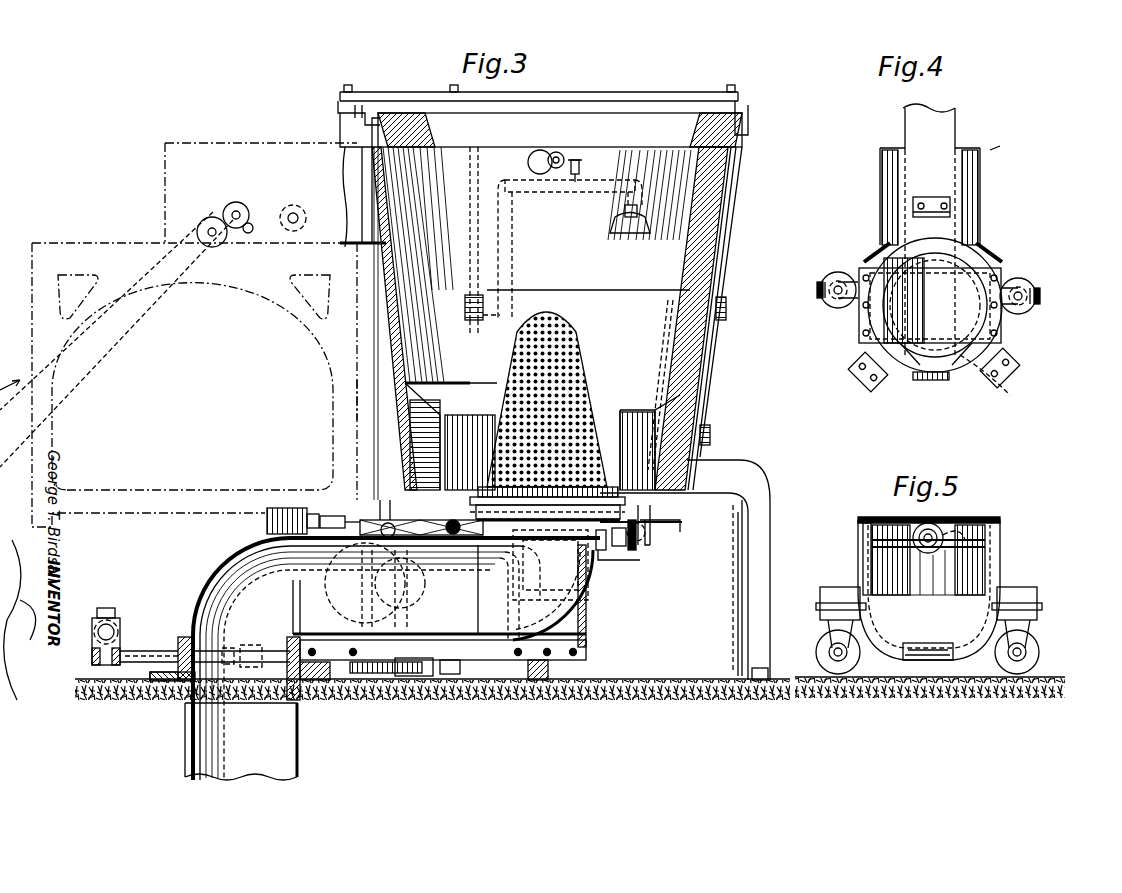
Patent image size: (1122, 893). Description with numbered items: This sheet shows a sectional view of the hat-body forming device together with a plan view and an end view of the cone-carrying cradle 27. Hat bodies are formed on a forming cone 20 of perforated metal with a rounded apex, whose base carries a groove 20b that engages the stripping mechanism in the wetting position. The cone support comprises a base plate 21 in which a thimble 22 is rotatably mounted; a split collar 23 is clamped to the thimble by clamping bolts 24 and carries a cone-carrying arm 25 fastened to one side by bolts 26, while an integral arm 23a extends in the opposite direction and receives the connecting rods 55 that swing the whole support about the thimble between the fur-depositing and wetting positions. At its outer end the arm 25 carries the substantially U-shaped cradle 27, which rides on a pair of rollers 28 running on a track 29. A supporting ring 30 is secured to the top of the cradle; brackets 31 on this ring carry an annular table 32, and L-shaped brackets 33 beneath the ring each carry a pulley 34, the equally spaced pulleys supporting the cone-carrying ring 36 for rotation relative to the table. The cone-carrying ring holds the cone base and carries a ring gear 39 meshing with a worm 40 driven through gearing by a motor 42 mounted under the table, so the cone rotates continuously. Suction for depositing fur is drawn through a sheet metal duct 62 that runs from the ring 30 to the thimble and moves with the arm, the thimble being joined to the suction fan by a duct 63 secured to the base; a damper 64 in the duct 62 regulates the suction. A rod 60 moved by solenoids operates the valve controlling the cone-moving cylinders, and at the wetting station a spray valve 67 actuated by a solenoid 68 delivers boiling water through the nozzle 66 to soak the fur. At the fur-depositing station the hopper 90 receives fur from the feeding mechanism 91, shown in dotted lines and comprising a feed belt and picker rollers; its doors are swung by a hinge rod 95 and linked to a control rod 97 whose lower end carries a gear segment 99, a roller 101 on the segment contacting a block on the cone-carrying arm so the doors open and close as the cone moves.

In FIG. 3, the forming cone 20 is at (585, 372).
In FIG. 3, the groove 20b is at (475, 508).
In FIG. 3, the base plate 21 is at (165, 690).
In FIG. 3, the thimble 22 is at (186, 637).
In FIG. 3, the split collar 23 is at (323, 663).
In FIG. 4, the split collar 23 is at (948, 122).
In FIG. 5, the split collar 23 is at (940, 660).
In FIG. 3, the arm 23a is at (145, 651).
In FIG. 3, the clamping bolts 24 is at (252, 645).
In FIG. 3, the cone-carrying arm 25 is at (420, 674).
In FIG. 3, the bolts 26 is at (320, 645).
In FIG. 3, the cone-carrying cradle 27 is at (594, 637).
In FIG. 4, the cone-carrying cradle 27 is at (851, 330).
In FIG. 5, the cone-carrying cradle 27 is at (850, 556).
In FIG. 3, the rollers 28 is at (540, 682).
In FIG. 4, the rollers 28 is at (818, 290).
In FIG. 5, the rollers 28 is at (818, 650).
In FIG. 3, the track 29 is at (552, 672).
In FIG. 5, the track 29 is at (1045, 676).
In FIG. 3, the supporting ring 30 is at (603, 550).
In FIG. 4, the supporting ring 30 is at (910, 362).
In FIG. 5, the supporting ring 30 is at (866, 520).
In FIG. 3, the brackets 31 is at (640, 548).
In FIG. 3, the annular table 32 is at (665, 540).
In FIG. 4, the annular table 32 is at (950, 205).
In FIG. 3, the L-shaped brackets 33 is at (615, 560).
In FIG. 4, the L-shaped brackets 33 is at (985, 382).
In FIG. 5, the L-shaped brackets 33 is at (975, 520).
In FIG. 3, the pulley 34 is at (620, 548).
In FIG. 4, the pulley 34 is at (872, 250).
In FIG. 5, the pulley 34 is at (936, 525).
In FIG. 3, the cone-carrying ring 36 is at (630, 522).
In FIG. 3, the ring gear 39 is at (648, 540).
In FIG. 3, the worm 40 is at (455, 540).
In FIG. 3, the motor 42 is at (383, 512).
In FIG. 3, the connecting rods 55 is at (118, 618).
In FIG. 3, the rod 60 is at (286, 508).
In FIG. 3, the sheet metal duct 62 is at (240, 566).
In FIG. 3, the duct 63 is at (200, 752).
In FIG. 3, the damper 64 is at (410, 585).
In FIG. 3, the nozzle 66 is at (630, 234).
In FIG. 3, the valve 67 is at (340, 516).
In FIG. 3, the solenoid 68 is at (548, 150).
In FIG. 3, the hopper 90 is at (712, 240).
In FIG. 3, the fur feeding mechanism 91 is at (124, 226).
In FIG. 3, the hinge rod 95 is at (468, 190).
In FIG. 3, the control rod 97 is at (358, 384).
In FIG. 3, the gear segment 99 is at (428, 676).
In FIG. 3, the roller 101 is at (452, 674).